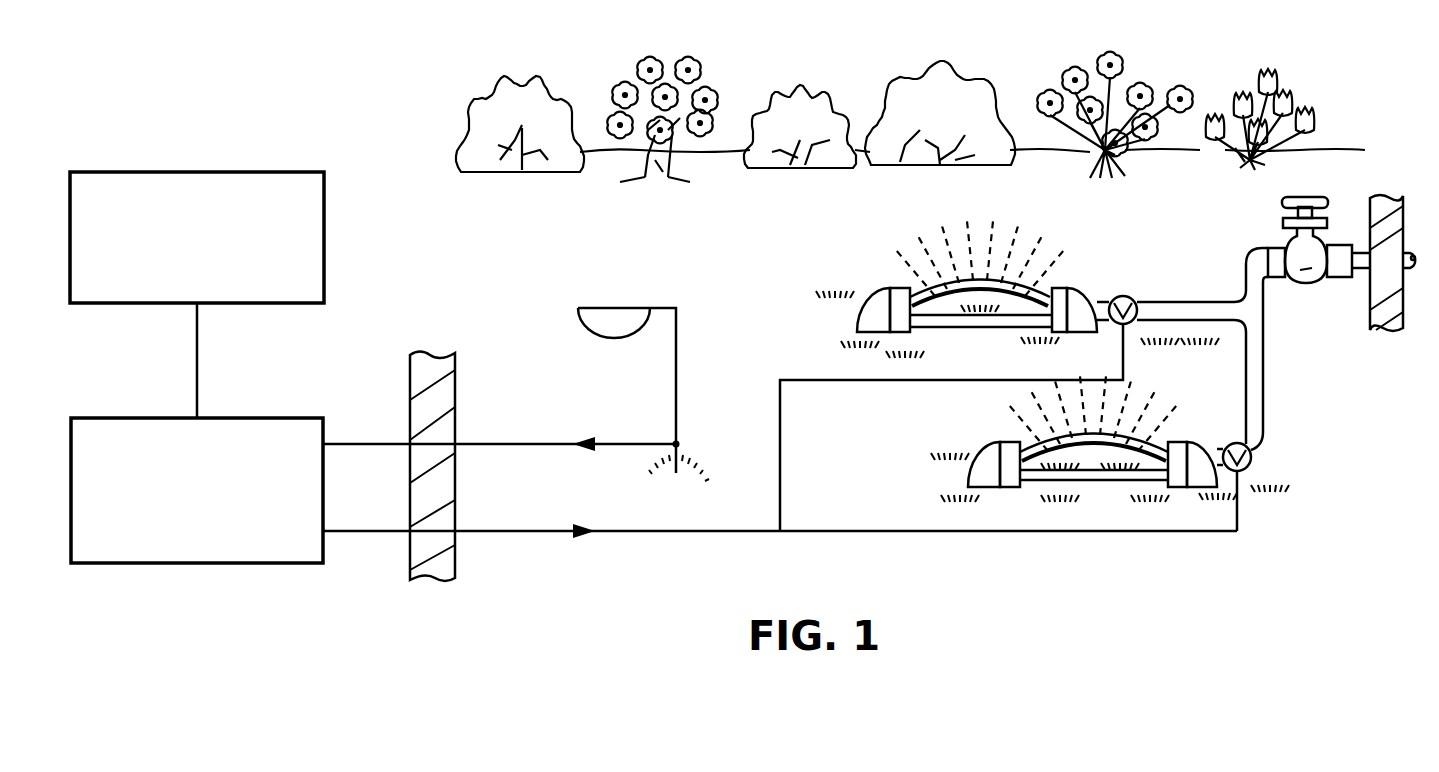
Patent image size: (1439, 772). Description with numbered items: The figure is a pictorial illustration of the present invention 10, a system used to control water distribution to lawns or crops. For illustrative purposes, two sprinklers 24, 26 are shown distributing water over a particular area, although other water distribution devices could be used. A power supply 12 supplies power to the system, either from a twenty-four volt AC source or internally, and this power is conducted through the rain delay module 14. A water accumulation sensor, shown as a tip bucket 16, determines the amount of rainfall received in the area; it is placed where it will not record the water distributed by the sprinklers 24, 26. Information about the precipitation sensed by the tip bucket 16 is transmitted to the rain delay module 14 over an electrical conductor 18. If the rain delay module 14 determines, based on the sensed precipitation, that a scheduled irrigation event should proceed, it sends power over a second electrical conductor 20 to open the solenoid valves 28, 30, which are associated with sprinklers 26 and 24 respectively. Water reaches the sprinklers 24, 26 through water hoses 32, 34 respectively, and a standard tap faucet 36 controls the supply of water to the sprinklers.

The present invention 10 is at (458, 621).
The power supply 12 is at (272, 172).
The rain delay module 14 is at (295, 418).
The tip bucket 16 is at (614, 307).
The electrical conductor 18 is at (518, 443).
The electrical conductor 20 is at (635, 530).
The sprinkler 24 is at (985, 452).
The sprinkler 26 is at (872, 298).
The solenoid valve 28 is at (1123, 296).
The solenoid valve 30 is at (1253, 457).
The water hose 32 is at (1265, 388).
The water hose 34 is at (1192, 302).
The tap faucet 36 is at (1283, 224).